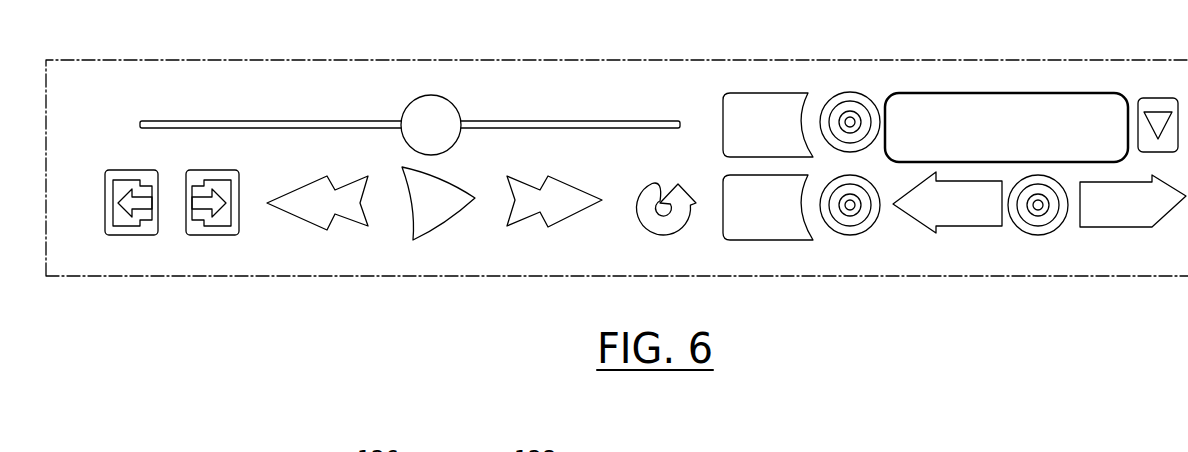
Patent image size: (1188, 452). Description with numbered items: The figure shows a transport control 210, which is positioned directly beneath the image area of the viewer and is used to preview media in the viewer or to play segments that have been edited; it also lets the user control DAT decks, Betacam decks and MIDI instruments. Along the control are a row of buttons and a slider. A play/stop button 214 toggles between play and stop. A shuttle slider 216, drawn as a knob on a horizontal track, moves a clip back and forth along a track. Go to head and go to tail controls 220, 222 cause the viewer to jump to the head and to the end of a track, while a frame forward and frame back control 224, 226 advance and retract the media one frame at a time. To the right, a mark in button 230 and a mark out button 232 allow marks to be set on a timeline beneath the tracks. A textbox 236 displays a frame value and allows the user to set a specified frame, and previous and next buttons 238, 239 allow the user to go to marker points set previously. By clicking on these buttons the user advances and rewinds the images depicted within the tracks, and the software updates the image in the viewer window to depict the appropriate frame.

The transport control 210 is at (392, 238).
The play/stop button 214 is at (433, 208).
The shuttle slider 216 is at (432, 105).
The go to head control 220 is at (302, 212).
The go to tail control 222 is at (567, 187).
The frame forward control 224 is at (125, 170).
The frame back control 226 is at (212, 170).
The mark in button 230 is at (780, 105).
The mark out button 232 is at (788, 235).
The textbox 236 is at (957, 92).
The previous button 238 is at (960, 226).
The next button 239 is at (1115, 226).